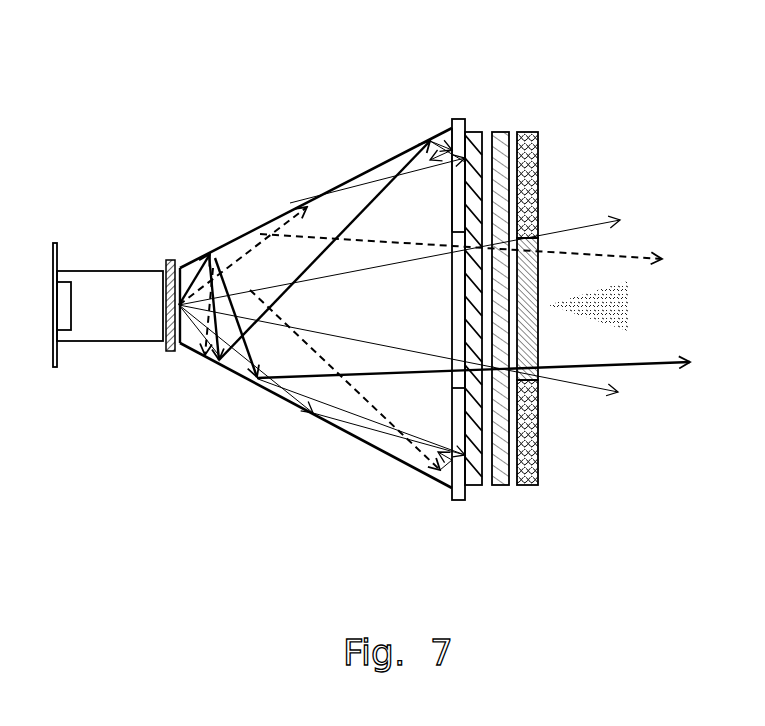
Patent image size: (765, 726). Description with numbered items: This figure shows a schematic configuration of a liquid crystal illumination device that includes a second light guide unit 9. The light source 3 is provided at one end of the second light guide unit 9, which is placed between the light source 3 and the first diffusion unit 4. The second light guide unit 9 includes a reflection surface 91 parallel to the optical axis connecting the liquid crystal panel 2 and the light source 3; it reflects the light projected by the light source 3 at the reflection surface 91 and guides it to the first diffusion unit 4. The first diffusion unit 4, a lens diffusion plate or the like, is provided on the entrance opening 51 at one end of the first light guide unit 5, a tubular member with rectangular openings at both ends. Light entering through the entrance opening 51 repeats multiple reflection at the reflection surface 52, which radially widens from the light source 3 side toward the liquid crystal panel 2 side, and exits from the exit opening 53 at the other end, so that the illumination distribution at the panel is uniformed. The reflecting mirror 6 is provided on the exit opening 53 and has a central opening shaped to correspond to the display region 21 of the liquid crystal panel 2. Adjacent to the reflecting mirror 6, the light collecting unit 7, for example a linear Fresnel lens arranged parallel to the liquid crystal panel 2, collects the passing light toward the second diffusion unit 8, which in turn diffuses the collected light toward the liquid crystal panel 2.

The liquid crystal panel 2 is at (569, 276).
The display region 21 is at (538, 350).
The light source 3 is at (72, 307).
The first diffusion unit 4 is at (170, 258).
The first light guide unit 5 is at (434, 274).
The entrance opening 51 is at (185, 262).
The reflection surface 52 is at (359, 182).
The exit opening 53 is at (452, 218).
The reflecting mirror 6 is at (456, 118).
The light collecting unit 7 is at (474, 131).
The second diffusion unit 8 is at (502, 131).
The second light guide unit 9 is at (129, 270).
The reflection surface 91 is at (100, 272).